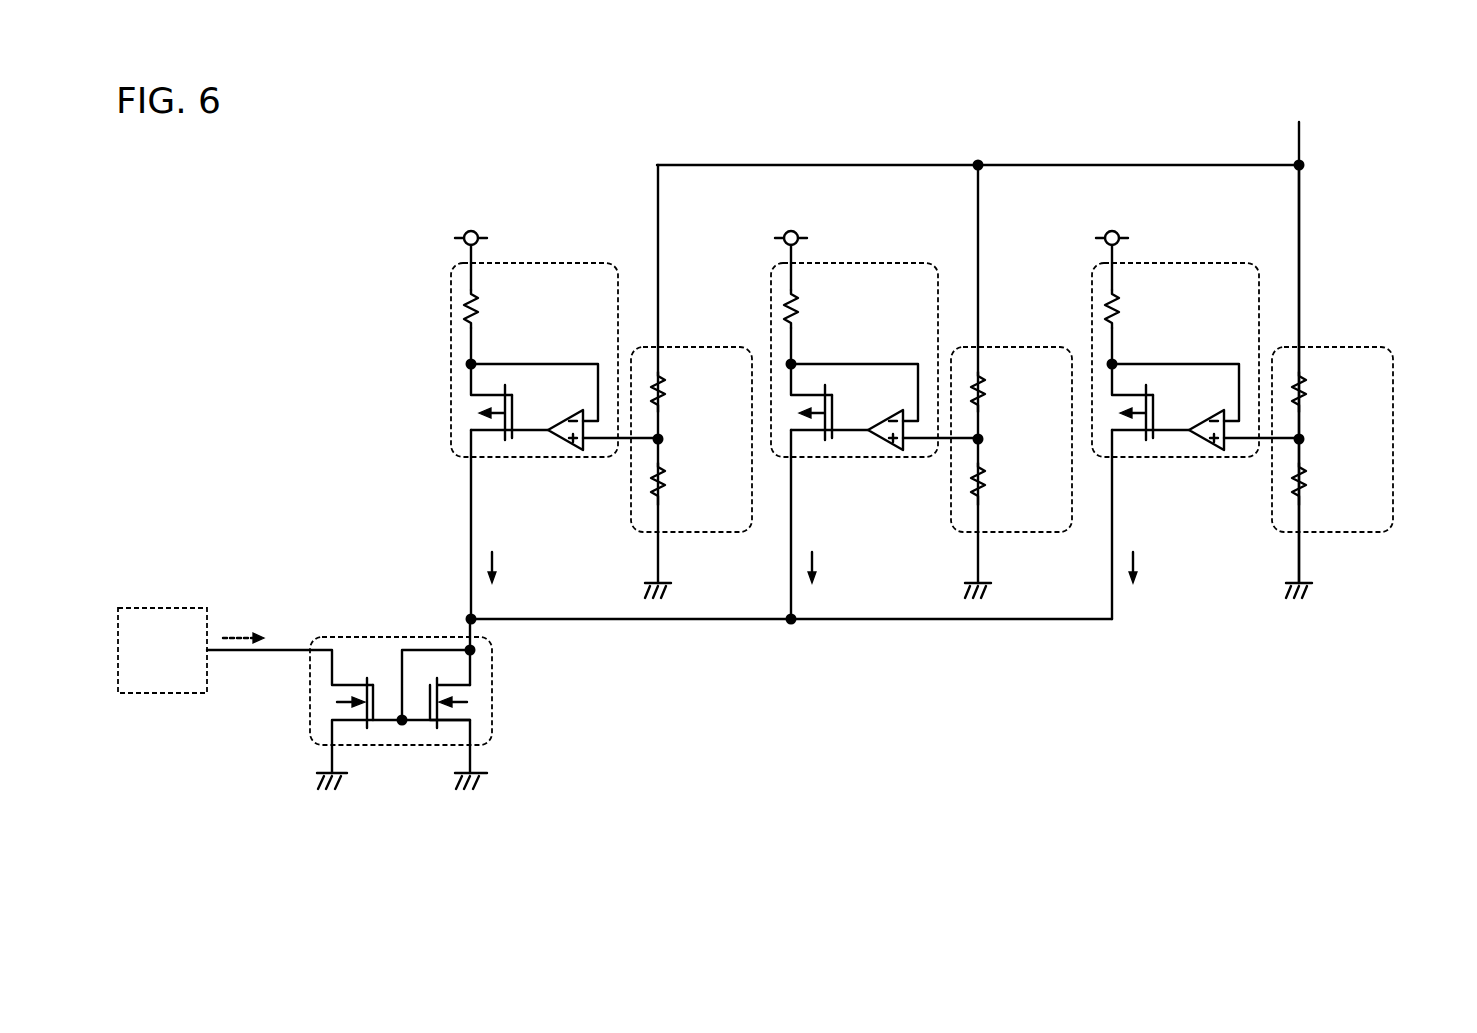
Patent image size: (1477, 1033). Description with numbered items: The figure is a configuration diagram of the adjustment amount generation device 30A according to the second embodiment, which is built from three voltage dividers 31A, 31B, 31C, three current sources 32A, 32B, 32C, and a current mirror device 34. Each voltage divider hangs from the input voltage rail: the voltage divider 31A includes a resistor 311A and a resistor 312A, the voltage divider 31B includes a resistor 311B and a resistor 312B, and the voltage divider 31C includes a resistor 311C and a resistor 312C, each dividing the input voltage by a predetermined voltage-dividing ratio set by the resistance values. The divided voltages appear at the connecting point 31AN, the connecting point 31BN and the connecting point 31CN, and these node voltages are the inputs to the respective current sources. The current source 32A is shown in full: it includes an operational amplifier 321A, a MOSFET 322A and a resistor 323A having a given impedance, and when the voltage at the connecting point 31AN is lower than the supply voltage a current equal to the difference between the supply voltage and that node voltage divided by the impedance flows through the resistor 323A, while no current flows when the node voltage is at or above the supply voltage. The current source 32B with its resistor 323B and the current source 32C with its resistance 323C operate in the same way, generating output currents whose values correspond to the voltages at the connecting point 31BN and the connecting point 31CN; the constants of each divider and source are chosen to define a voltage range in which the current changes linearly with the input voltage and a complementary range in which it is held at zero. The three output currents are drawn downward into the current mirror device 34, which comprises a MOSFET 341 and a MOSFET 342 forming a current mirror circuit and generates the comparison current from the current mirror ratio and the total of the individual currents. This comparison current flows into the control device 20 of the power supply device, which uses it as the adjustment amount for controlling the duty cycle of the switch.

The adjustment amount generation device 30A is at (1410, 172).
The control device 20 is at (177, 695).
The current mirror device 34 is at (493, 700).
The MOSFET 341 is at (428, 729).
The MOSFET 342 is at (370, 729).
The current source 32A is at (593, 262).
The current source 32B is at (854, 329).
The current source 32C is at (1175, 329).
The operational amplifier 321A is at (569, 419).
The MOSFET 322A is at (477, 418).
The resistor 323A is at (477, 297).
The resistor 323B is at (835, 305).
The resistance 323C is at (1156, 305).
The voltage divider 31A is at (712, 346).
The voltage divider 31B is at (1013, 381).
The voltage divider 31C is at (1334, 381).
The resistor 311A is at (667, 399).
The resistor 311B is at (1018, 391).
The resistor 311C is at (1339, 391).
The resistor 312A is at (667, 485).
The resistor 312B is at (1016, 490).
The resistor 312C is at (1337, 490).
The connecting point 31AN is at (664, 438).
The connecting point 31BN is at (1024, 438).
The connecting point 31CN is at (1345, 438).